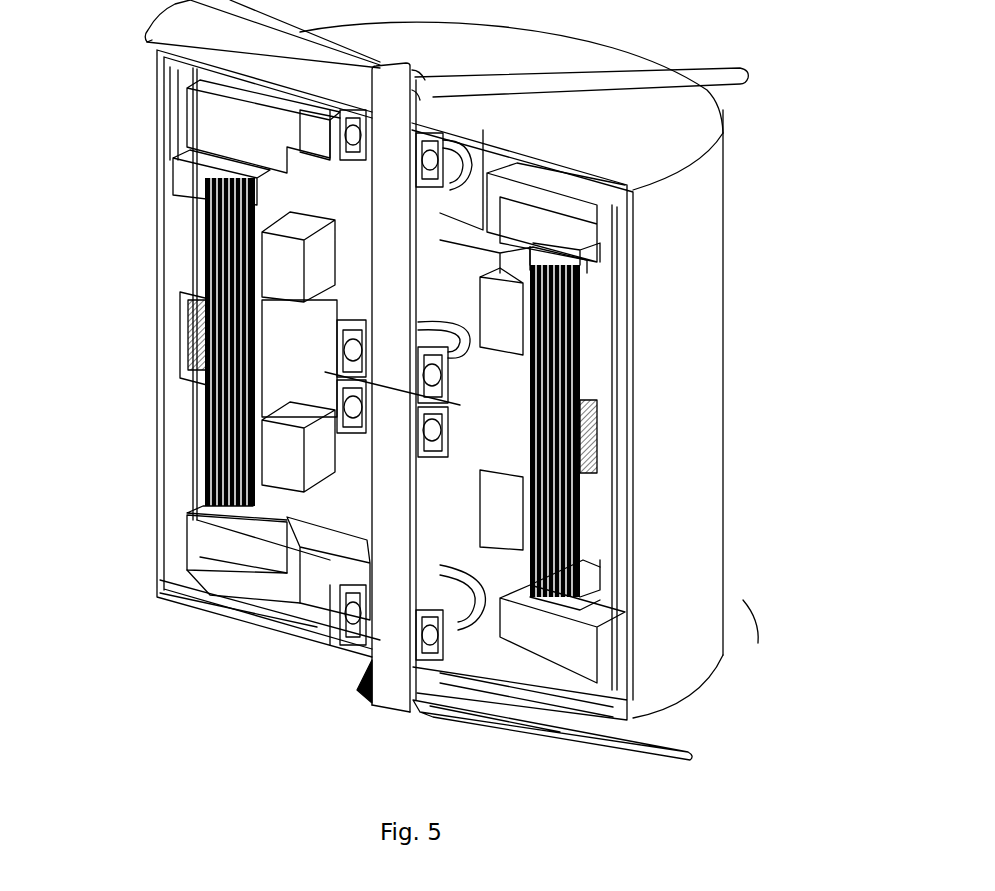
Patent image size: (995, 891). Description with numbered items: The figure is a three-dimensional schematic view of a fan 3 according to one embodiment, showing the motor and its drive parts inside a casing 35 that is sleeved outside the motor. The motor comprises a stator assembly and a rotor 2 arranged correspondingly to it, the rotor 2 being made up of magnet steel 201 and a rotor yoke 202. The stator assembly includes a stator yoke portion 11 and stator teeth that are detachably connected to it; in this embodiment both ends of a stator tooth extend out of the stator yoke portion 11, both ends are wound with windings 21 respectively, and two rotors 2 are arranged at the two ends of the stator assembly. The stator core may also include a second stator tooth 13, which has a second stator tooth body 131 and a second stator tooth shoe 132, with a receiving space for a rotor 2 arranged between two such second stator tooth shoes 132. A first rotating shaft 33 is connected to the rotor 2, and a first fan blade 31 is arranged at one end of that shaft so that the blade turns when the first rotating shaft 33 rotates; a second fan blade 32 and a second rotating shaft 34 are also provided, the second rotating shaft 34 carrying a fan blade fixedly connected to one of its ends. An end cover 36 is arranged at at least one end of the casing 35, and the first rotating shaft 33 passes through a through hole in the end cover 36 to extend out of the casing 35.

The rotor 2 is at (78, 70).
The magnet steel 201 is at (198, 143).
The rotor yoke 202 is at (253, 125).
The winding 21 is at (273, 255).
The stator yoke portion 11 is at (188, 340).
The second stator tooth 13 is at (72, 542).
The second stator tooth body 131 is at (303, 503).
The second stator tooth shoe 132 is at (263, 492).
The fan 3 is at (387, 717).
The first fan blade 31 is at (450, 90).
The second fan blade 32 is at (657, 740).
The first rotating shaft 33 is at (400, 127).
The second rotating shaft 34 is at (533, 567).
The casing 35 is at (697, 553).
The end cover 36 is at (685, 123).